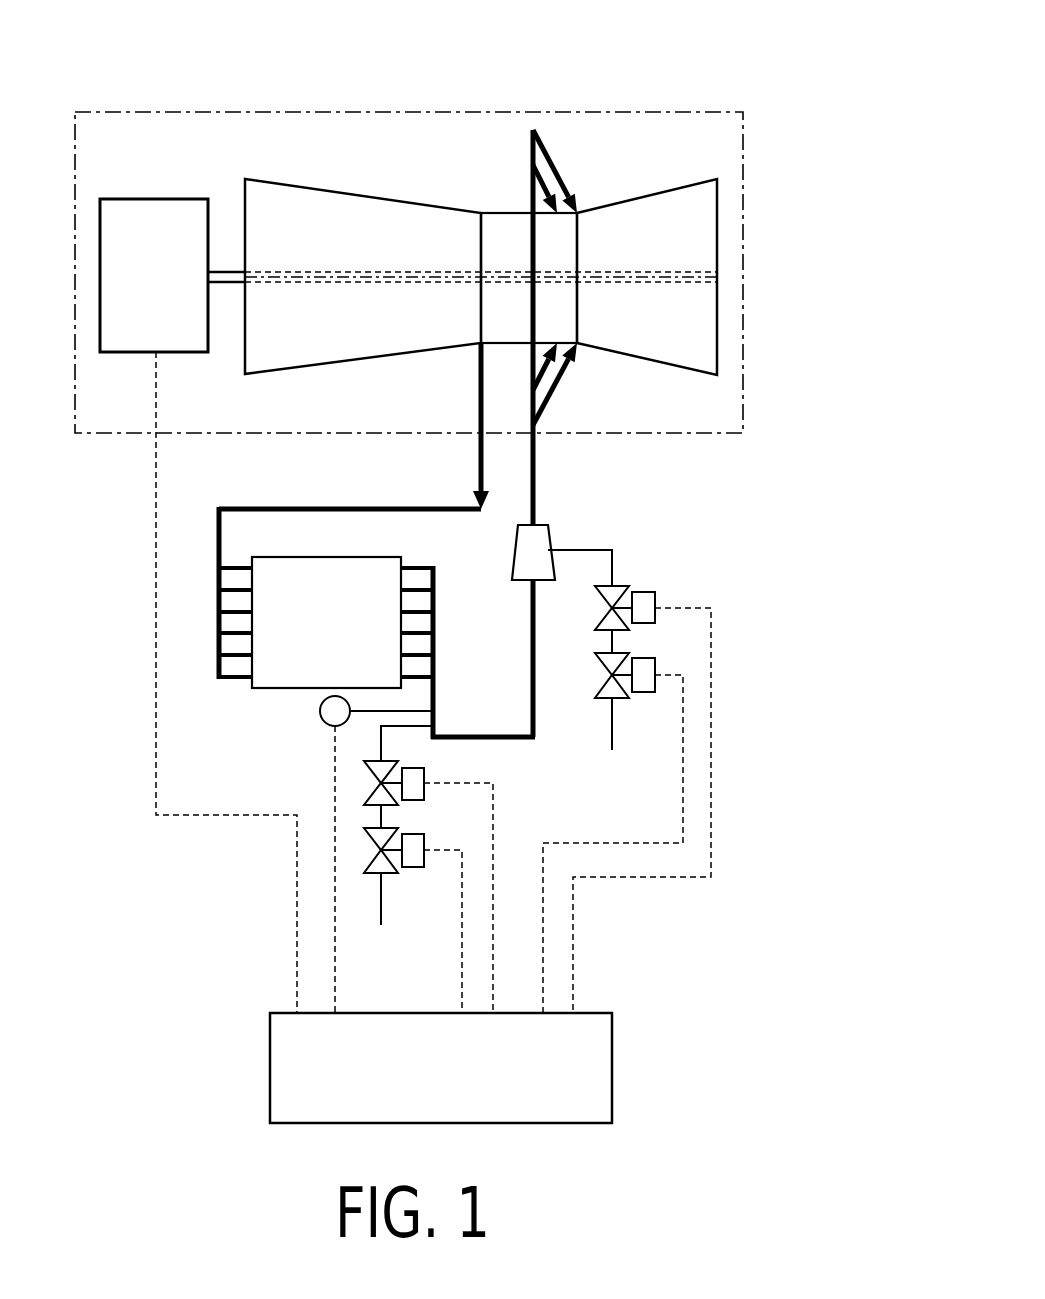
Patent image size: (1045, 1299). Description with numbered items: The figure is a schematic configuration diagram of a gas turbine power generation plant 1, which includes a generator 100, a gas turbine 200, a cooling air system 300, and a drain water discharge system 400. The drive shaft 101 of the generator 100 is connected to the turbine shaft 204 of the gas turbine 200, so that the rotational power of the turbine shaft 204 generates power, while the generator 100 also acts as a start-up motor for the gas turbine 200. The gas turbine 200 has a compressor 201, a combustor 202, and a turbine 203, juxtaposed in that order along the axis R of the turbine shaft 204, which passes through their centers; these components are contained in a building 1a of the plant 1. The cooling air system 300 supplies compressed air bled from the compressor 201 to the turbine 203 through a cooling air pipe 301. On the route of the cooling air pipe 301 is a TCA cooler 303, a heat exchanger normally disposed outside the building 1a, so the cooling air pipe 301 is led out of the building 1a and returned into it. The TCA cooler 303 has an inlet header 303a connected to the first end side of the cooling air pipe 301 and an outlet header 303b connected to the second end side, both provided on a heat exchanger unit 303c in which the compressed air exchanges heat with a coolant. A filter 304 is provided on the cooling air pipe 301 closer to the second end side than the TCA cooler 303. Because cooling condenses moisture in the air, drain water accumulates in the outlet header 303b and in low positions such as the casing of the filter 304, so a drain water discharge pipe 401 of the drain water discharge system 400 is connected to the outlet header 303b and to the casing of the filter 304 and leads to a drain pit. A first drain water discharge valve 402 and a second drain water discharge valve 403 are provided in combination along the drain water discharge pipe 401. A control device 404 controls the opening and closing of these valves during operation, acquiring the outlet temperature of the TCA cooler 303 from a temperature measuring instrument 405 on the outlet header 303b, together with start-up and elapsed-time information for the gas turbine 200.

The gas turbine power generation plant 1 is at (727, 55).
The building 1a is at (745, 143).
The generator 100 is at (156, 198).
The drive shaft 101 is at (227, 268).
The gas turbine 200 is at (438, 206).
The compressor 201 is at (300, 184).
The combustor 202 is at (507, 212).
The turbine 203 is at (650, 188).
The turbine shaft 204 is at (348, 270).
The axis R is at (682, 277).
The cooling air system 300 is at (301, 656).
The cooling air pipe 301 is at (268, 509).
The TCA cooler 303 is at (278, 559).
The inlet header 303a is at (217, 595).
The outlet header 303b is at (470, 590).
The heat exchanger unit 303c is at (275, 690).
The filter 304 is at (518, 582).
The drain water discharge system 400 is at (565, 737).
The drain water discharge pipe 401 is at (610, 735).
The first drain water discharge valve 402 is at (618, 580).
The second drain water discharge valve 403 is at (618, 652).
The control device 404 is at (613, 1065).
The temperature measuring instrument 405 is at (322, 722).